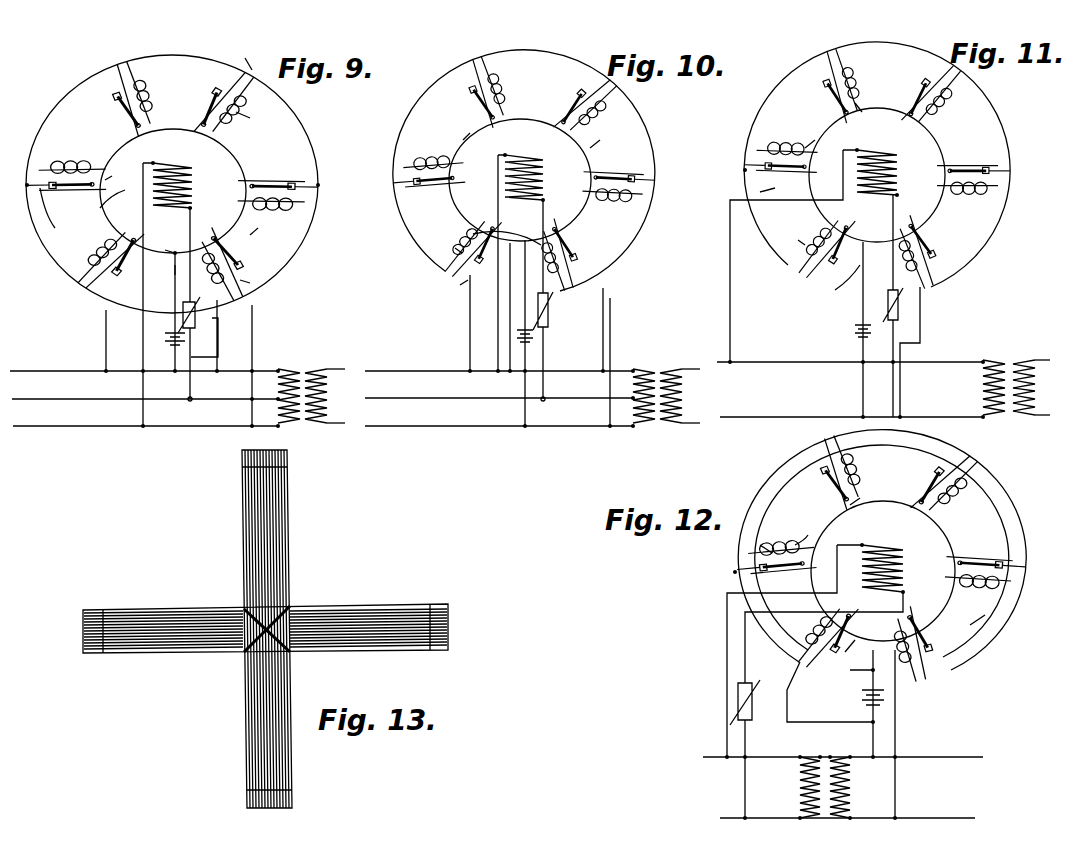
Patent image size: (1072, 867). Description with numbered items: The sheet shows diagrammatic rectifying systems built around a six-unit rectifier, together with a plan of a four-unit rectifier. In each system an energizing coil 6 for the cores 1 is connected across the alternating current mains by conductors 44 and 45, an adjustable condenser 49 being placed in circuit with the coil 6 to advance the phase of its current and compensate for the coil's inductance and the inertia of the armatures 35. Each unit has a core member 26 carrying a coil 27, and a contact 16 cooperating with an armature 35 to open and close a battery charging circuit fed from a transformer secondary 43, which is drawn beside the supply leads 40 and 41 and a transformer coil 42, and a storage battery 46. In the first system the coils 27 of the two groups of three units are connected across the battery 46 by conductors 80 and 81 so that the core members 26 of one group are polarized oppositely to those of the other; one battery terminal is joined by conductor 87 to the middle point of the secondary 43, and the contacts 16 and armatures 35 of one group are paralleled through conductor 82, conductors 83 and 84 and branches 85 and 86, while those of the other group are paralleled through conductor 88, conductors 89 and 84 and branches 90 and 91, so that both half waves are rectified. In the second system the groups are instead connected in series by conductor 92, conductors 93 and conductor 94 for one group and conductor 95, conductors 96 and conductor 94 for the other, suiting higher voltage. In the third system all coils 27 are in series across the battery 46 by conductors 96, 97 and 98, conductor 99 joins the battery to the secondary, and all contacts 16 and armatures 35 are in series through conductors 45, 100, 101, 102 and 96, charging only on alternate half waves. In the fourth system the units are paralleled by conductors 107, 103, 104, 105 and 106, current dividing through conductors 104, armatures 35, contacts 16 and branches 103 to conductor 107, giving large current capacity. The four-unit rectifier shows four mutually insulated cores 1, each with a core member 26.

In FIG. 13, the core 1 is at (286, 598).
In FIG. 9, the energizing coil 6 is at (172, 164).
In FIG. 10, the energizing coil 6 is at (520, 163).
In FIG. 11, the energizing coil 6 is at (884, 158).
In FIG. 12, the energizing coil 6 is at (888, 552).
In FIG. 9, the contact 16 is at (172, 181).
In FIG. 10, the contact 16 is at (523, 180).
In FIG. 11, the contact 16 is at (748, 183).
In FIG. 12, the contact 16 is at (879, 558).
In FIG. 13, the core member 26 is at (244, 453).
In FIG. 9, the coil 27 is at (190, 171).
In FIG. 10, the coil 27 is at (497, 244).
In FIG. 11, the coil 27 is at (846, 228).
In FIG. 12, the coil 27 is at (835, 622).
In FIG. 9, the armature 35 is at (174, 216).
In FIG. 10, the armature 35 is at (514, 267).
In FIG. 11, the armature 35 is at (867, 216).
In FIG. 12, the armature 35 is at (874, 578).
In FIG. 9, the supply lead 40 is at (340, 368).
In FIG. 10, the supply lead 40 is at (695, 368).
In FIG. 11, the supply lead 40 is at (1040, 358).
In FIG. 12, the supply lead 40 is at (720, 757).
In FIG. 9, the supply lead 41 is at (333, 427).
In FIG. 10, the supply lead 41 is at (690, 427).
In FIG. 11, the supply lead 41 is at (1037, 420).
In FIG. 12, the supply lead 41 is at (722, 818).
In FIG. 9, the transformer coil 42 is at (322, 398).
In FIG. 10, the transformer coil 42 is at (685, 397).
In FIG. 11, the transformer coil 42 is at (1022, 396).
In FIG. 12, the transformer coil 42 is at (811, 775).
In FIG. 9, the transformer secondary 43 is at (282, 369).
In FIG. 10, the transformer secondary 43 is at (638, 369).
In FIG. 11, the transformer secondary 43 is at (988, 360).
In FIG. 12, the transformer secondary 43 is at (845, 800).
In FIG. 9, the conductor 44 is at (191, 236).
In FIG. 10, the conductor 44 is at (544, 215).
In FIG. 11, the conductor 44 is at (892, 335).
In FIG. 12, the conductor 44 is at (820, 705).
In FIG. 9, the conductor 45 is at (143, 345).
In FIG. 10, the conductor 45 is at (498, 160).
In FIG. 11, the conductor 45 is at (730, 268).
In FIG. 12, the conductor 45 is at (727, 660).
In FIG. 9, the storage battery 46 is at (172, 346).
In FIG. 10, the storage battery 46 is at (536, 338).
In FIG. 11, the storage battery 46 is at (855, 333).
In FIG. 12, the storage battery 46 is at (860, 703).
In FIG. 9, the adjustable condenser 49 is at (195, 328).
In FIG. 10, the adjustable condenser 49 is at (550, 305).
In FIG. 11, the adjustable condenser 49 is at (882, 305).
In FIG. 12, the adjustable condenser 49 is at (754, 702).
In FIG. 9, the conductor 80 is at (110, 95).
In FIG. 10, the conductor 80 is at (425, 100).
In FIG. 9, the conductor 81 is at (225, 70).
In FIG. 10, the conductor 81 is at (568, 62).
In FIG. 9, the conductor 82 is at (106, 325).
In FIG. 9, the conductor 83 is at (169, 246).
In FIG. 9, the conductor 84 is at (162, 270).
In FIG. 9, the branch 85 is at (91, 261).
In FIG. 9, the branch 86 is at (135, 216).
In FIG. 9, the conductor 87 is at (180, 390).
In FIG. 10, the conductor 87 is at (490, 388).
In FIG. 9, the conductor 88 is at (253, 338).
In FIG. 9, the conductor 89 is at (240, 150).
In FIG. 9, the branch 90 is at (254, 278).
In FIG. 9, the branch 91 is at (242, 237).
In FIG. 10, the conductor 92 is at (470, 325).
In FIG. 10, the conductors 93 is at (464, 160).
In FIG. 10, the conductor 94 is at (525, 125).
In FIG. 10, the conductor 95 is at (611, 315).
In FIG. 10, the conductors 96 is at (604, 181).
In FIG. 11, the conductors 96 is at (846, 280).
In FIG. 12, the conductors 96 is at (854, 652).
In FIG. 11, the conductor 97 is at (760, 240).
In FIG. 12, the conductor 97 is at (980, 620).
In FIG. 11, the conductor 98 is at (921, 335).
In FIG. 12, the conductor 98 is at (795, 725).
In FIG. 11, the conductor 99 is at (862, 385).
In FIG. 12, the conductor 99 is at (872, 735).
In FIG. 11, the conductor 100 is at (781, 190).
In FIG. 11, the conductors 101 is at (870, 112).
In FIG. 11, the conductor 102 is at (832, 240).
In FIG. 12, the branches 103 is at (950, 452).
In FIG. 12, the conductors 104 is at (860, 498).
In FIG. 12, the conductor 105 is at (940, 525).
In FIG. 12, the conductor 106 is at (897, 748).
In FIG. 12, the conductor 107 is at (770, 490).